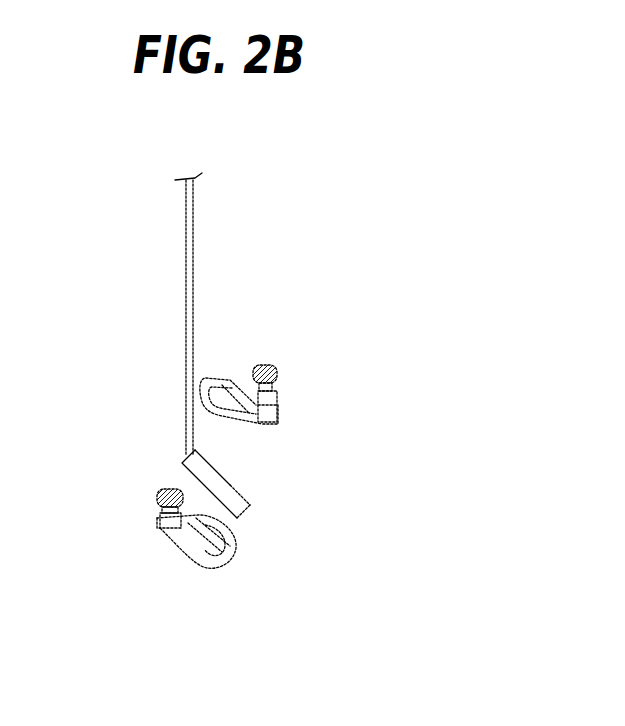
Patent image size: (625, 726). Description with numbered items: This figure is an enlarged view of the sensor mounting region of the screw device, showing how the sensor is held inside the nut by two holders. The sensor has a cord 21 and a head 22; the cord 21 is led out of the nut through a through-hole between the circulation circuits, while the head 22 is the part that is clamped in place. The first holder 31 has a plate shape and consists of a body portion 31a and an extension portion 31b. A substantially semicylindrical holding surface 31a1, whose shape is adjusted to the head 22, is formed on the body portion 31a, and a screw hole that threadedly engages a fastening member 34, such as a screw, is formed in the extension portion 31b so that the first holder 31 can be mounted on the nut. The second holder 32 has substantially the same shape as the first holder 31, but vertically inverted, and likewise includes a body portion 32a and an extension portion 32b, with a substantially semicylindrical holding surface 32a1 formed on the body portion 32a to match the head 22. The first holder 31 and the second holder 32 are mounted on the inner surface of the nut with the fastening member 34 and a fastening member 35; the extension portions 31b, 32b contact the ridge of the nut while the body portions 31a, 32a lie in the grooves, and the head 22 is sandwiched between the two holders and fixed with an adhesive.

The cord 21 is at (194, 284).
The head 22 is at (232, 488).
The first holder 31 is at (256, 419).
The body portion 31a is at (237, 402).
The holding surface 31a1 is at (247, 405).
The extension portion 31b is at (276, 425).
The second holder 32 is at (183, 560).
The body portion 32a is at (202, 560).
The holding surface 32a1 is at (233, 541).
The extension portion 32b is at (160, 527).
The fastening member 34 is at (273, 365).
The fastening member 35 is at (163, 490).